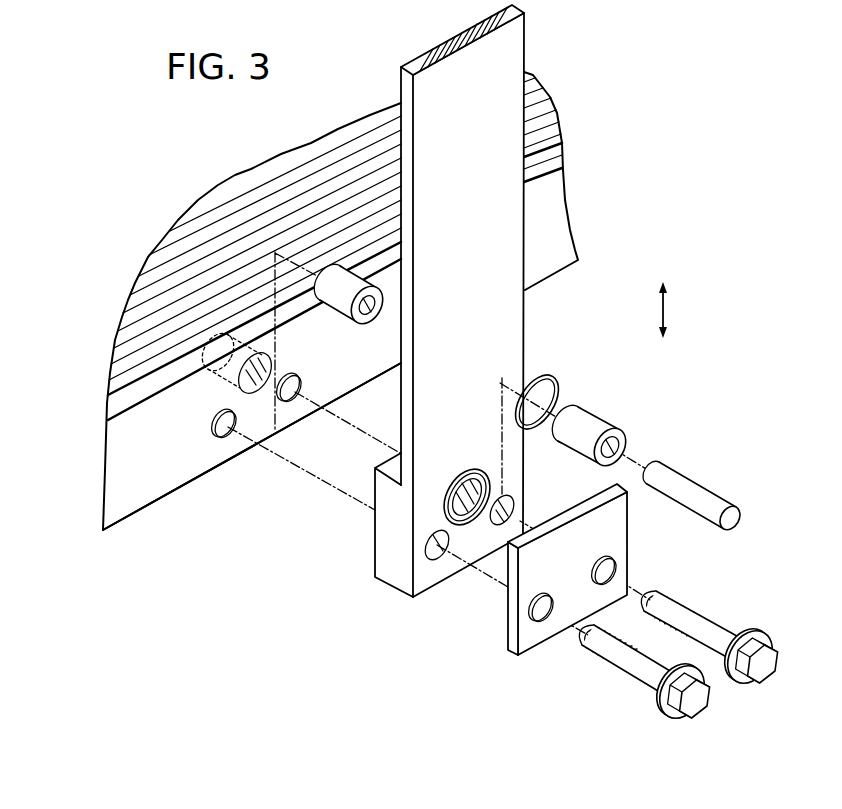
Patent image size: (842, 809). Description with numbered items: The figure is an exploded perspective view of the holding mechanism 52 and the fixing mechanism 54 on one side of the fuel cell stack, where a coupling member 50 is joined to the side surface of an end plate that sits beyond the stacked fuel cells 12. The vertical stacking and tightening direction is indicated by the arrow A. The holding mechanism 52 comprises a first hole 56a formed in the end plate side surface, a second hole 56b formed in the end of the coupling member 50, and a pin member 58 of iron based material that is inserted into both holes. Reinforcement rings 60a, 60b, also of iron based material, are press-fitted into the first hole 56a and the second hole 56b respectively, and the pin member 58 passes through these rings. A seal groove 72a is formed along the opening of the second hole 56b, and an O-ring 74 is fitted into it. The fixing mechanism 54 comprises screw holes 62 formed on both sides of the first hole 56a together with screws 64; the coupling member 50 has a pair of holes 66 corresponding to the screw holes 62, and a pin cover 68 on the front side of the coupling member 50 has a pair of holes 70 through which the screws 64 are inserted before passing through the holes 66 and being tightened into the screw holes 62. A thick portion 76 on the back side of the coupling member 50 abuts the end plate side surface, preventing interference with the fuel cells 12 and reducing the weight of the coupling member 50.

The fuel cells 12 is at (117, 317).
The first hole 56a is at (245, 387).
The screw holes 62 is at (293, 401).
The reinforcement ring 60a is at (350, 313).
The coupling member 50 is at (449, 332).
The thick portion 76 is at (373, 469).
The seal groove 72a is at (479, 472).
The second hole 56b is at (456, 480).
The holes 66 is at (437, 559).
The O-ring 74 is at (547, 371).
The holding mechanism 52 is at (640, 413).
The reinforcement ring 60b is at (590, 420).
The pin member 58 is at (672, 480).
The fixing mechanism 54 is at (720, 686).
The pin cover 68 is at (510, 632).
The holes 70 is at (617, 567).
The screws 64 is at (715, 628).
The arrow A is at (672, 310).